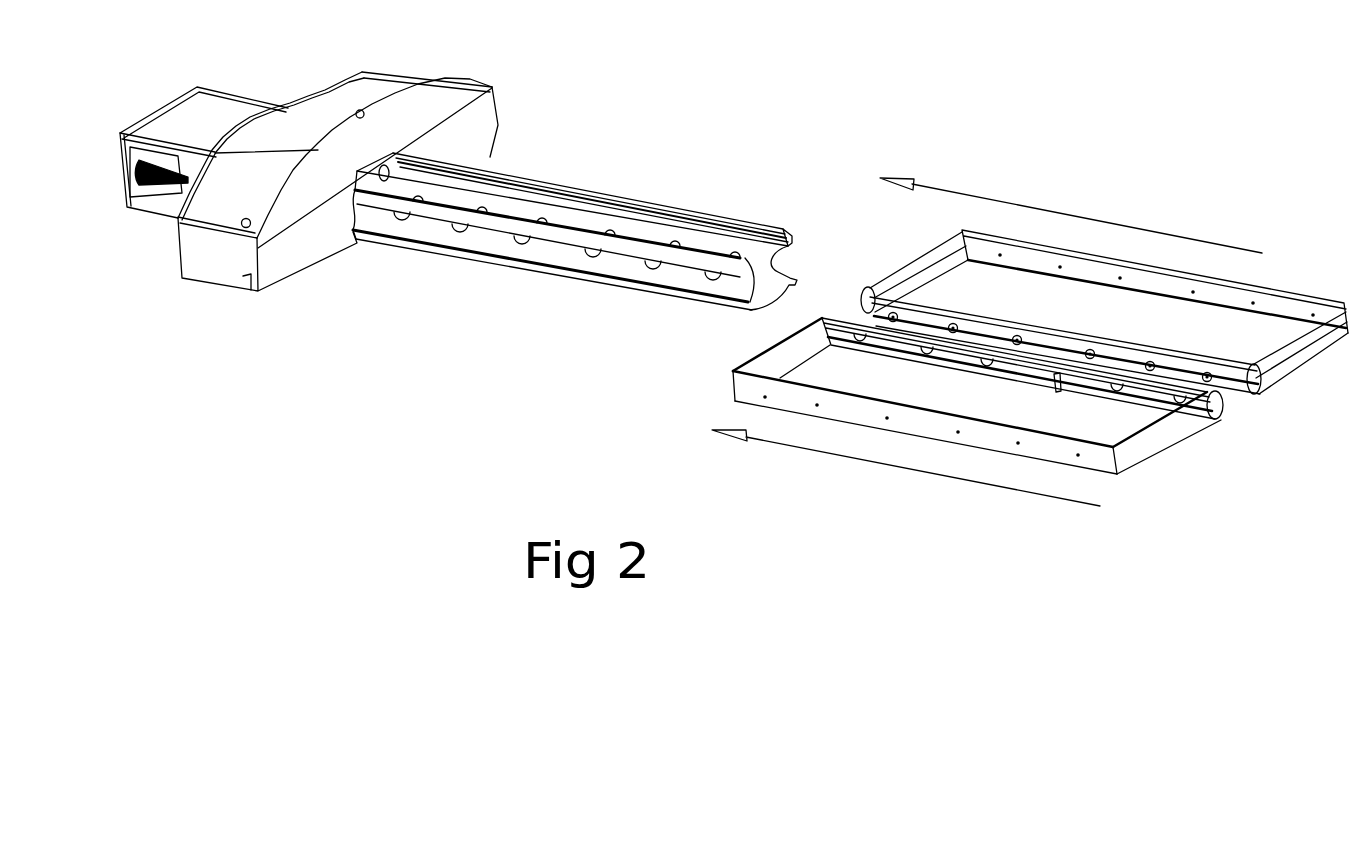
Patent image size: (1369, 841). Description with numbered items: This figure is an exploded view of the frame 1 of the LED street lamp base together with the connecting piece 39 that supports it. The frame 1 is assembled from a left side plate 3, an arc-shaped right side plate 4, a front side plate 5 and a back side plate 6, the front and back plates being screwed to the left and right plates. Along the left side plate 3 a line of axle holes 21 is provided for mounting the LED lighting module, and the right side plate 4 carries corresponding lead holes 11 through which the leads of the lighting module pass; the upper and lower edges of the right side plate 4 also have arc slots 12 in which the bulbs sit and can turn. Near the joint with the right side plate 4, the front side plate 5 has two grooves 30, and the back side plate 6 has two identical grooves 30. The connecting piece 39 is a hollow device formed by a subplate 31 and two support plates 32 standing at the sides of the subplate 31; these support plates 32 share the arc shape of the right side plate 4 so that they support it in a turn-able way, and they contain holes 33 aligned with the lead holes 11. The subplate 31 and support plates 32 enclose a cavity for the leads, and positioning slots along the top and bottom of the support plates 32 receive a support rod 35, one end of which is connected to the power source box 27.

The frame 1 is at (820, 287).
The left side plate 3 is at (852, 413).
The right side plate 4 is at (920, 317).
The front side plate 5 is at (780, 359).
The back side plate 6 is at (1142, 445).
The lead holes 11 is at (923, 347).
The arc slots 12 is at (1058, 378).
The axle holes 21 is at (960, 430).
The power source box 27 is at (223, 260).
The grooves 30 is at (826, 320).
The subplate 31 is at (768, 288).
The support plates 32 is at (560, 250).
The holes 33 is at (522, 243).
The support rod 35 is at (785, 230).
The connecting piece 39 is at (550, 147).